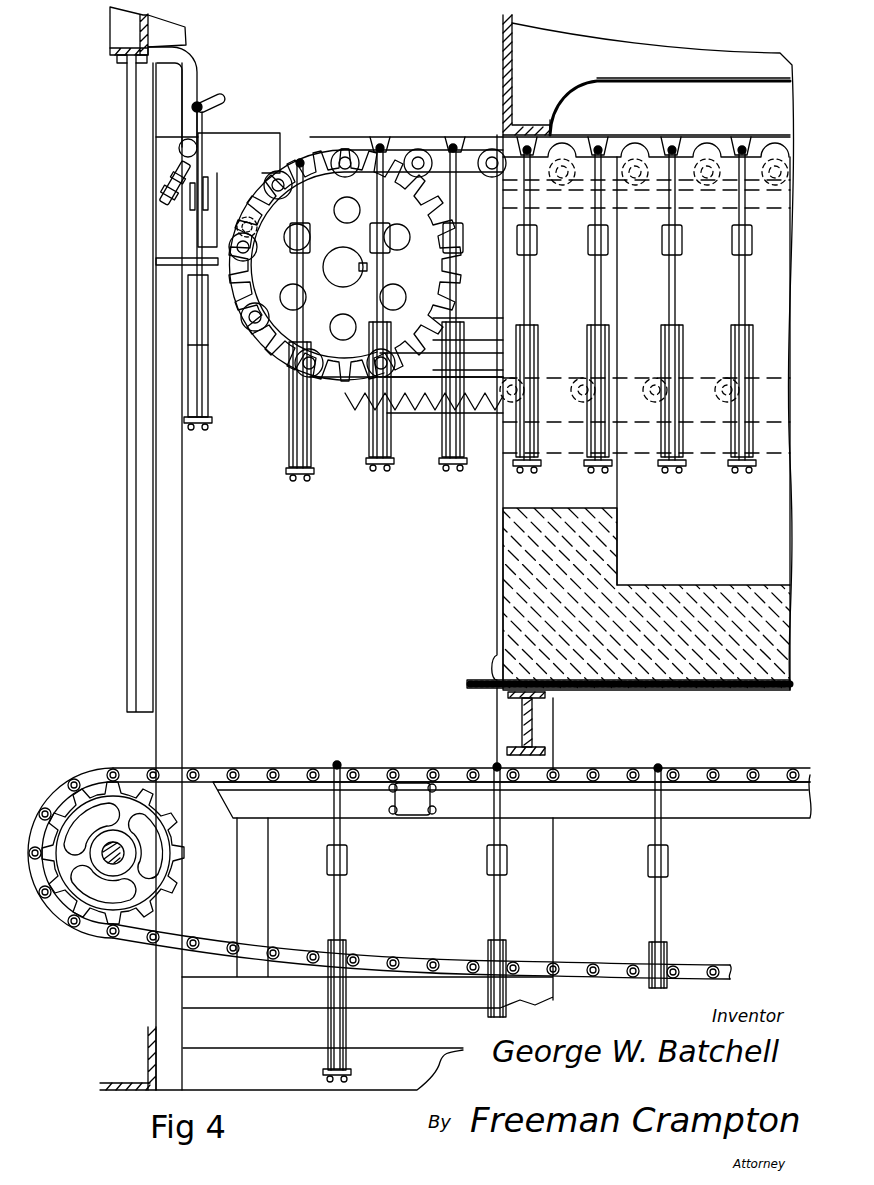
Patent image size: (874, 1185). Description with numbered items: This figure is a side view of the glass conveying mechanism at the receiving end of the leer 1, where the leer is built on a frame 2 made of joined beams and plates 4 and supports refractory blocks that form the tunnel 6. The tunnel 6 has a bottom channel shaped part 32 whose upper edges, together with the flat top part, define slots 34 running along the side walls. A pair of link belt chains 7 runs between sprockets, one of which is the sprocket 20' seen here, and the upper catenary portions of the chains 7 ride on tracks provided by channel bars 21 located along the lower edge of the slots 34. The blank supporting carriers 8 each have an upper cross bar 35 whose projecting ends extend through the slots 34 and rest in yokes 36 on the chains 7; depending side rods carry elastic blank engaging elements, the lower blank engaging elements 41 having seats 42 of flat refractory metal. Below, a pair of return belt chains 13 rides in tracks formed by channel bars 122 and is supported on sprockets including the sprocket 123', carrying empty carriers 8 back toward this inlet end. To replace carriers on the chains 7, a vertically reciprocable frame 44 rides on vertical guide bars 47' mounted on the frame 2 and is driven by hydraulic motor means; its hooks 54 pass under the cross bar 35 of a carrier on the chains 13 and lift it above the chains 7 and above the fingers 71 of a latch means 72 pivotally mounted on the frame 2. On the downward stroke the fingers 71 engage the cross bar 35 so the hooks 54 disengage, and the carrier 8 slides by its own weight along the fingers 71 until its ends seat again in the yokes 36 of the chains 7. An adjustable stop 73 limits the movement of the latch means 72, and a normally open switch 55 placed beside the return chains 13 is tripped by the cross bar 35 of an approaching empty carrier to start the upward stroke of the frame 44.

The leer 1 is at (520, 38).
The frame 2 is at (507, 725).
The plates 4 is at (497, 565).
The tunnel 6 is at (610, 88).
The link belt chains 7 is at (400, 135).
The blank supporting carriers 8 is at (601, 283).
The return belt chains 13 is at (165, 775).
The sprocket 20' is at (359, 265).
The channel bars 21 is at (712, 206).
The bottom channel shaped part 32 is at (530, 620).
The slots 34 is at (645, 136).
The cross bar 35 is at (567, 123).
The yokes 36 is at (435, 135).
The lower blank engaging elements 41 is at (305, 445).
The seats 42 is at (298, 486).
The vertically reciprocable frame 44 is at (117, 36).
The guide bars 47' is at (109, 383).
The hooks 54 is at (185, 97).
The switch 55 is at (419, 804).
The fingers 71 is at (213, 170).
The latch means 72 is at (232, 195).
The adjustable stop 73 is at (160, 190).
The channel bars 122 is at (599, 805).
The sprocket 123' is at (176, 853).